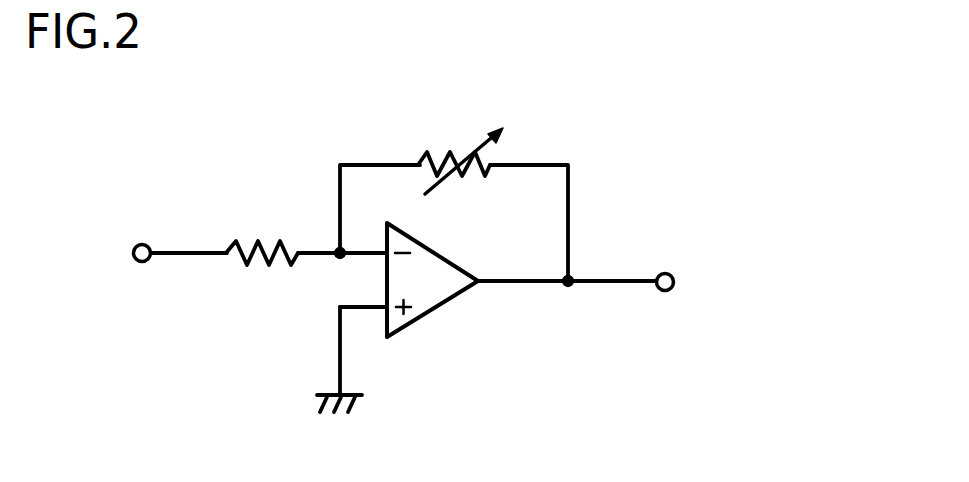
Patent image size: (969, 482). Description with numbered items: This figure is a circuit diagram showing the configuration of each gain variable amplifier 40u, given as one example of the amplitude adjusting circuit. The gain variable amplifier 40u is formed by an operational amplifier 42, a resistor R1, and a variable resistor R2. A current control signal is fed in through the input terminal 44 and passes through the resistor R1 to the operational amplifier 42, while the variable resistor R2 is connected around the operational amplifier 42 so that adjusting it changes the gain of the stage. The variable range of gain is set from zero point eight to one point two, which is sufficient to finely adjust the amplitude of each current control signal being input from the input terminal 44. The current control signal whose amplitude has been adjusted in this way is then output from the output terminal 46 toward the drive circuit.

The gain variable amplifier 40u is at (514, 235).
The resistor R1 is at (268, 238).
The variable resistor R2 is at (437, 155).
The operational amplifier 42 is at (436, 305).
The input terminal 44 is at (142, 262).
The output terminal 46 is at (666, 291).